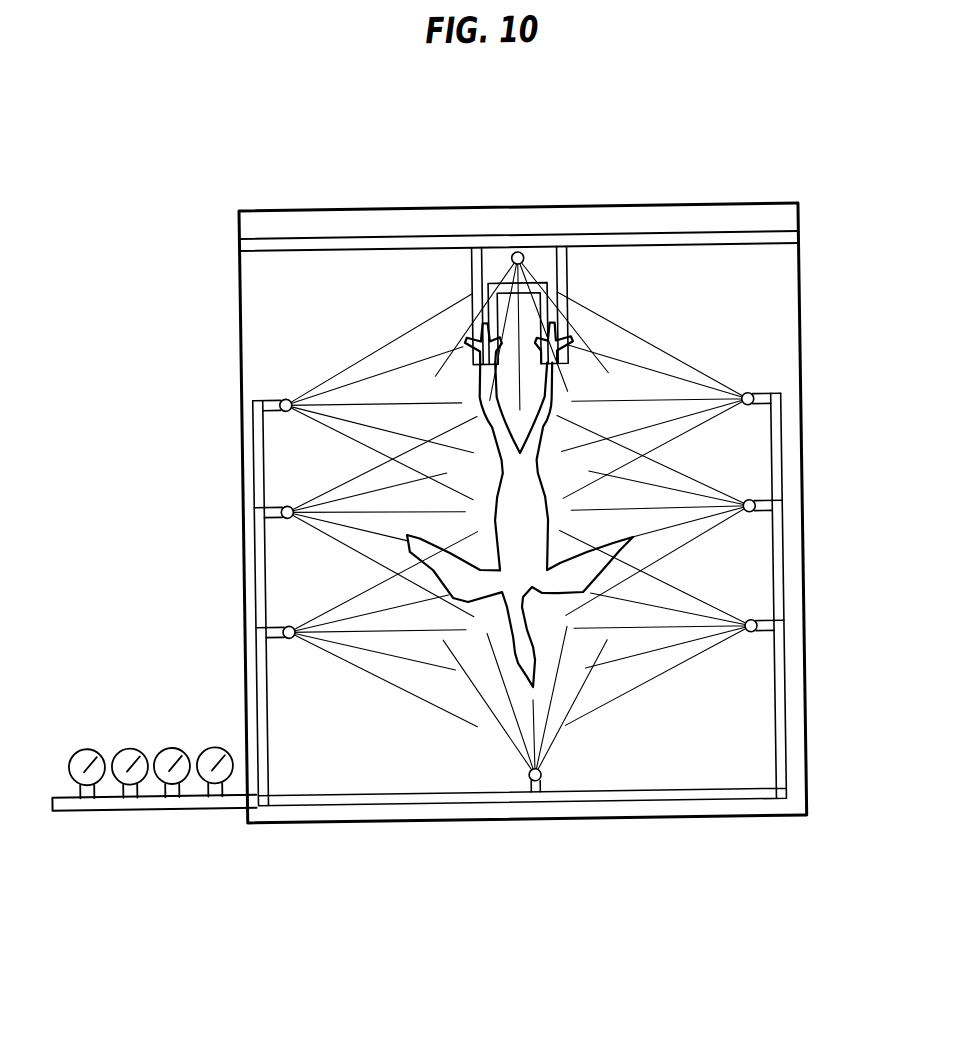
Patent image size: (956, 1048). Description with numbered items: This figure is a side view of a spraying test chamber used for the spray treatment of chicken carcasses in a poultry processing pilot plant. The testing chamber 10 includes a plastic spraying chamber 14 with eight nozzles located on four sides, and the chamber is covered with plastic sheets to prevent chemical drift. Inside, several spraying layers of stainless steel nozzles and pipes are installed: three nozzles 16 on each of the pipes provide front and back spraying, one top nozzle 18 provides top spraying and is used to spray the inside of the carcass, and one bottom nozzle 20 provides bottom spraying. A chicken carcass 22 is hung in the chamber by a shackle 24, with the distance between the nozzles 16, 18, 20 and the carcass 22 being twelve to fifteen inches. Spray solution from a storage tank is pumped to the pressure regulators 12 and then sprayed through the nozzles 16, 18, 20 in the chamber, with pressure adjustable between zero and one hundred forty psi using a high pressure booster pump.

The testing chamber 10 is at (726, 154).
The pressure regulators 12 is at (144, 746).
The plastic spraying chamber 14 is at (236, 302).
The nozzles 16 is at (249, 510).
The top nozzle 18 is at (517, 256).
The bottom nozzle 20 is at (535, 785).
The chicken carcass 22 is at (750, 640).
The shackle 24 is at (740, 254).